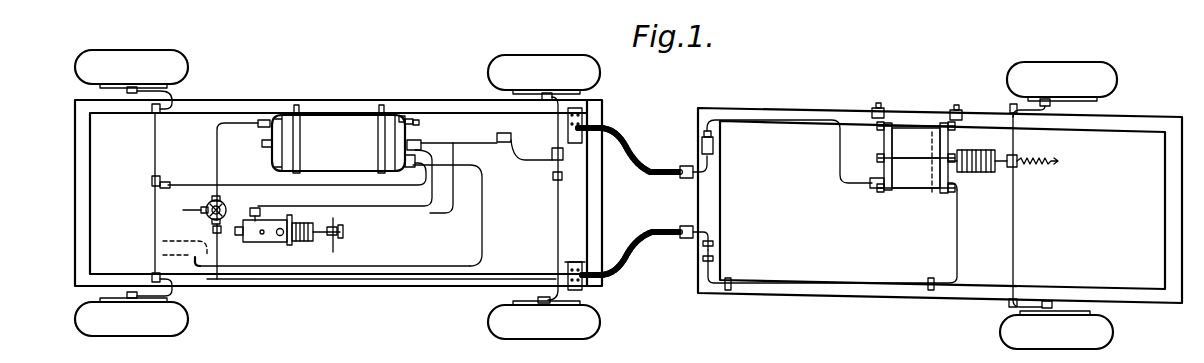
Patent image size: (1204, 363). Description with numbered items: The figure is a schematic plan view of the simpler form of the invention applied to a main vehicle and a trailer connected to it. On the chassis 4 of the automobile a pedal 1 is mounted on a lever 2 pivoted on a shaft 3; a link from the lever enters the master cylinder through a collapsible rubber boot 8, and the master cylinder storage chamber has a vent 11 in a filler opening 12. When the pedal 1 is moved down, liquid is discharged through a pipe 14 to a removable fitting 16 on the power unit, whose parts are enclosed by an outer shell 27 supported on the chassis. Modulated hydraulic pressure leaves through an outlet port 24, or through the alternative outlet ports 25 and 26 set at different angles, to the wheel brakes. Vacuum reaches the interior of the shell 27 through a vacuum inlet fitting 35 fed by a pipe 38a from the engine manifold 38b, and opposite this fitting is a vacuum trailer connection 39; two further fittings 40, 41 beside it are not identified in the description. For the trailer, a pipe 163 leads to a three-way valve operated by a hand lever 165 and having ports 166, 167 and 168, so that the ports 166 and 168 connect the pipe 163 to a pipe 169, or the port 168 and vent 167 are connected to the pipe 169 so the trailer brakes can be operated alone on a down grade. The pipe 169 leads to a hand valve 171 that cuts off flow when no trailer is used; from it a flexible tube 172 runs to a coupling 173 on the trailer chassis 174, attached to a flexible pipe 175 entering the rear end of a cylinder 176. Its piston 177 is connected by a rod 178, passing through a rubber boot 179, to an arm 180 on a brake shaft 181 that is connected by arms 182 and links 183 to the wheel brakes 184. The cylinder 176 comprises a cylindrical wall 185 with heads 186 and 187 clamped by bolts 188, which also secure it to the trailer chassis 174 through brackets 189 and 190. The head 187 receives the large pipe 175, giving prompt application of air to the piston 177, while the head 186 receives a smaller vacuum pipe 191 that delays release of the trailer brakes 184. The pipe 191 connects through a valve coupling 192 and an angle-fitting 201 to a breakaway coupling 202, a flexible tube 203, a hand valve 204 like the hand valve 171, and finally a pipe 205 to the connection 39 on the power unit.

The pedal 1 is at (343, 232).
The lever 2 is at (331, 240).
The shaft 3 is at (338, 252).
The chassis 4 is at (376, 280).
The collapsible rubber boot 8 is at (303, 224).
The vent 11 is at (281, 238).
The filler opening 12 is at (272, 238).
The pipe 14 is at (427, 214).
The removable fitting 16 is at (447, 143).
The outlet port 24 is at (416, 140).
The alternative outlet port 25 is at (348, 185).
The alternative outlet port 26 is at (405, 138).
The outer shell 27 is at (348, 115).
The vacuum inlet fitting 35 is at (408, 186).
The pipe 38a is at (483, 237).
The engine manifold 38b is at (160, 251).
The vacuum trailer connection 39 is at (408, 118).
The fitting 40 is at (402, 118).
The fitting 41 is at (415, 121).
The pipe 163 is at (235, 122).
The hand lever 165 is at (227, 198).
The port 166 is at (215, 198).
The vent port 167 is at (153, 211).
The port 168 is at (240, 251).
The pipe 169 is at (229, 280).
The hand valve 171 is at (576, 262).
The flexible tube 172 is at (638, 248).
The coupling 173 is at (706, 229).
The trailer chassis 174 is at (693, 286).
The flexible pipe 175 is at (955, 251).
The cylinder 176 is at (926, 192).
The piston 177 is at (935, 122).
The rod 178 is at (1010, 157).
The rubber boot 179 is at (992, 172).
The arm 180 is at (1017, 168).
The brake shaft 181 is at (1015, 232).
The arms 182 is at (1040, 111).
The links 183 is at (1050, 106).
The wheel brakes 184 is at (1098, 100).
The cylindrical wall 185 is at (900, 200).
The head 186 is at (887, 133).
The head 187 is at (949, 147).
The bolts 188 is at (915, 127).
The bracket 189 is at (878, 115).
The bracket 190 is at (960, 120).
The vacuum pipe 191 is at (838, 178).
The valve coupling 192 is at (714, 147).
The angle-fitting 201 is at (703, 172).
The coupling 202 is at (695, 180).
The flexible tube 203 is at (644, 176).
The hand valve 204 is at (583, 137).
The pipe 205 is at (548, 125).